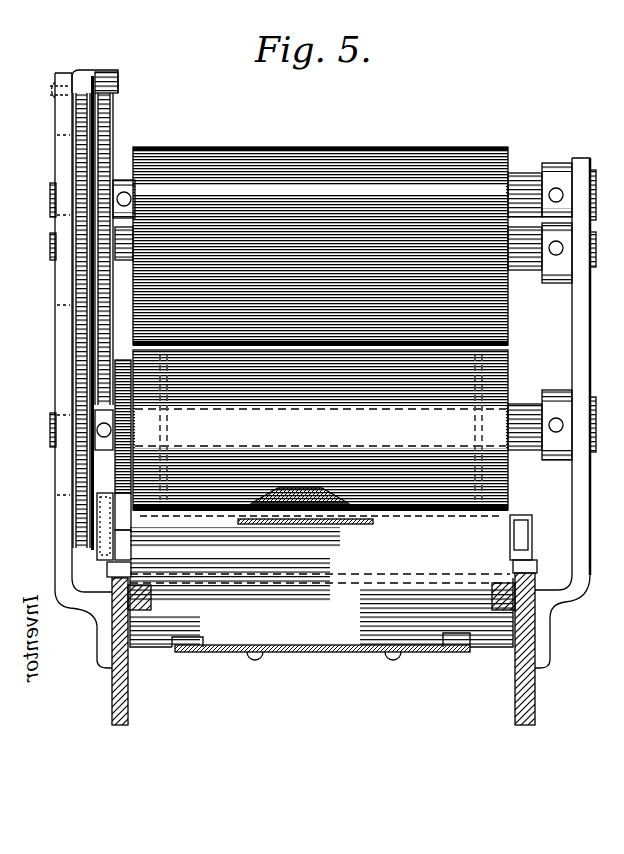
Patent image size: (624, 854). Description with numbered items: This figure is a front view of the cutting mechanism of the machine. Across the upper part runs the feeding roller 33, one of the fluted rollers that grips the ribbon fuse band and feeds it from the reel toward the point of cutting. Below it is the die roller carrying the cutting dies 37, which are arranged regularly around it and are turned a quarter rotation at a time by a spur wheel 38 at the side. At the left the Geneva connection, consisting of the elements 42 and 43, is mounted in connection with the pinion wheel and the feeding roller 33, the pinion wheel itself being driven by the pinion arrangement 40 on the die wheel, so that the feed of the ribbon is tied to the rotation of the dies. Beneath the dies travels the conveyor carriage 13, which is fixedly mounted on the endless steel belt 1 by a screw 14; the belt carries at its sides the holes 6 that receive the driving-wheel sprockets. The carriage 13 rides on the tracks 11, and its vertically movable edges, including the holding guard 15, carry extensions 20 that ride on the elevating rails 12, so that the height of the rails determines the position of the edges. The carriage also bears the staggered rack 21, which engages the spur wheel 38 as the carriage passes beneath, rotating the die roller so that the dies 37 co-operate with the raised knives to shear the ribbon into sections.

The steel belt 1 is at (312, 653).
The holes 6 is at (186, 648).
The tracks 11 is at (115, 608).
The elevating rails 12 is at (115, 581).
The conveyor carriage 13 is at (321, 567).
The screw 14 is at (250, 657).
The holding guard 15 is at (517, 519).
The extensions 20 is at (113, 567).
The rack 21 is at (130, 513).
The feeding roller 33 is at (297, 147).
The cutting dies 37 is at (490, 413).
The spur wheel 38 is at (118, 473).
The pinion arrangement 40 is at (82, 375).
The Geneva connection element 42 is at (113, 128).
The Geneva connection element 43 is at (82, 140).